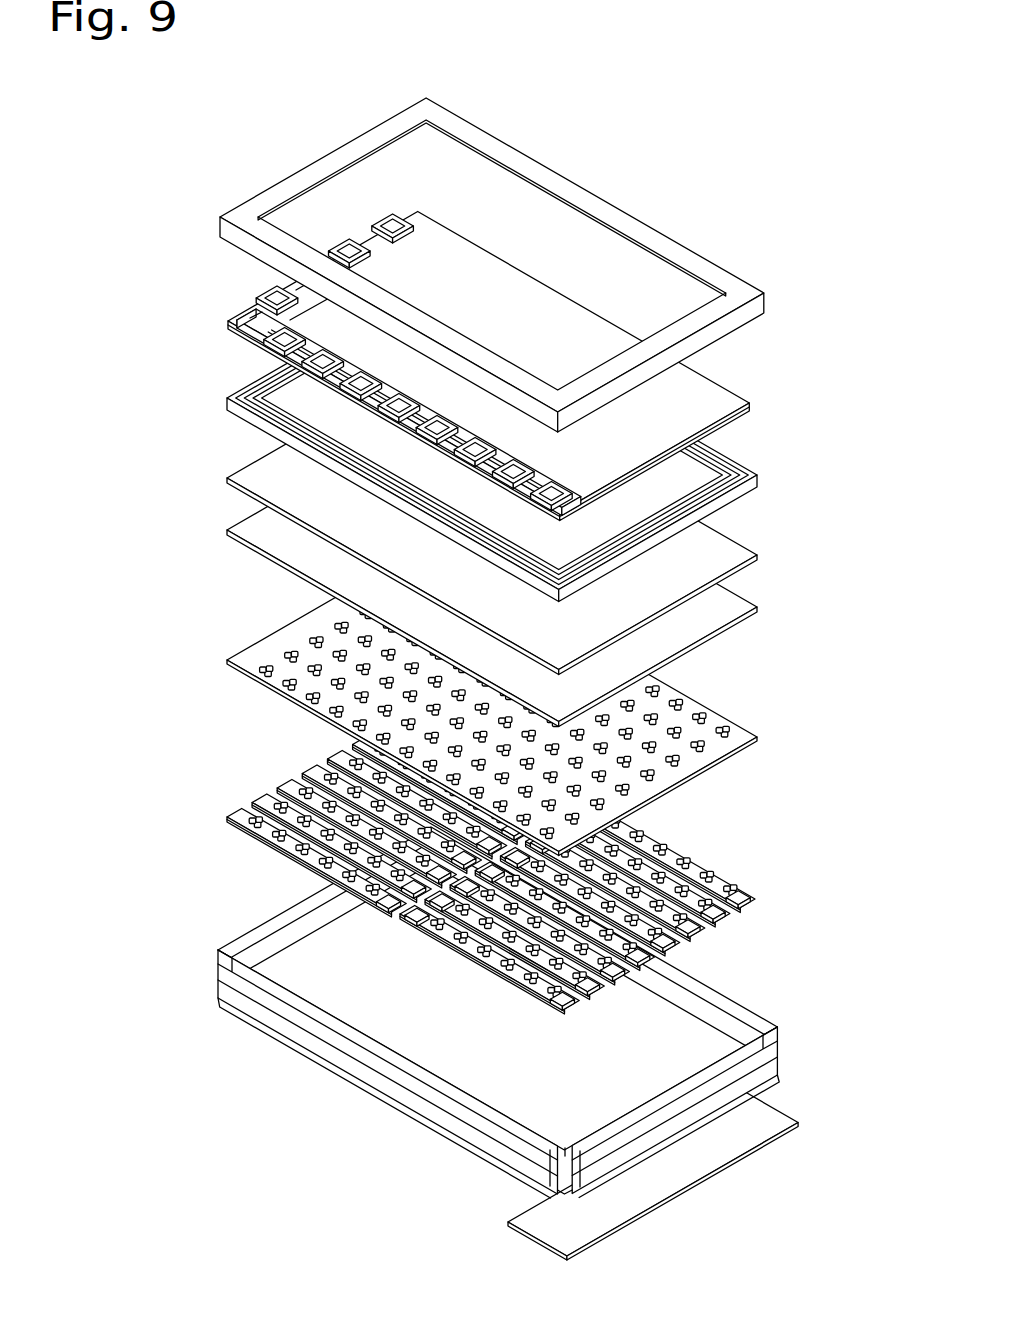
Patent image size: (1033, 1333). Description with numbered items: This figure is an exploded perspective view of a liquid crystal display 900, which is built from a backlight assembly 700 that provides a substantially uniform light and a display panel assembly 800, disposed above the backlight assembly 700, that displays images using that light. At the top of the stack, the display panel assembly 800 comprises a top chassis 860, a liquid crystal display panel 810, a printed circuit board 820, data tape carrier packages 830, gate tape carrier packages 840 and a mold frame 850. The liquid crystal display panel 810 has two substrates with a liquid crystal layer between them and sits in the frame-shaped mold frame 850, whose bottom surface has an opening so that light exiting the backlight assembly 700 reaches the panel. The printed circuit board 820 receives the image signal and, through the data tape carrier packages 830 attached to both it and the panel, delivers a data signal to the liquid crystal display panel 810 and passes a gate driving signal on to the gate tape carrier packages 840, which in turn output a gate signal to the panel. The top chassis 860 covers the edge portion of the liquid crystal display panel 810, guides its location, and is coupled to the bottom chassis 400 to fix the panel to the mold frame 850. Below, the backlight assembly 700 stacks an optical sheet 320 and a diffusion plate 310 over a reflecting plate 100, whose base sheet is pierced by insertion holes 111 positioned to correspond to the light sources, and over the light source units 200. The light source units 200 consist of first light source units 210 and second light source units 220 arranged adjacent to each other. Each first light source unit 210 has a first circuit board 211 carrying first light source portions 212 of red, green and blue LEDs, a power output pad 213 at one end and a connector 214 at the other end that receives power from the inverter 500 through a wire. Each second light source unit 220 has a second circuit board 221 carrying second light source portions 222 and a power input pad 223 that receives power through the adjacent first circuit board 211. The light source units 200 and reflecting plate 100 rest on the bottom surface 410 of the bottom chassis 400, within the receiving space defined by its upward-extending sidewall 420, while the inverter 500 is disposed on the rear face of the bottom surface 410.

The liquid crystal display 900 is at (664, 70).
The display panel assembly 800 is at (113, 222).
The liquid crystal display panel 810 is at (252, 308).
The printed circuit board 820 is at (262, 362).
The data tape carrier packages 830 is at (266, 342).
The gate tape carrier packages 840 is at (396, 222).
The mold frame 850 is at (762, 462).
The top chassis 860 is at (751, 272).
The backlight assembly 700 is at (113, 478).
The optical sheet 320 is at (752, 550).
The diffusion plate 310 is at (752, 602).
The reflecting plate 100 is at (745, 732).
The insertion holes 111 is at (746, 696).
The light source units 200 is at (744, 868).
The first light source units 210 is at (533, 995).
The first circuit board 211 is at (579, 999).
The first light source portions 212 is at (517, 971).
The power output pad 213 is at (416, 919).
The connector 214 is at (554, 1004).
The second light source units 220 is at (226, 822).
The second circuit board 221 is at (250, 811).
The second light source portions 222 is at (270, 838).
The power input pad 223 is at (388, 908).
The bottom chassis 400 is at (203, 956).
The bottom surface 410 is at (316, 998).
The sidewall 420 is at (378, 1073).
The inverter 500 is at (725, 1150).